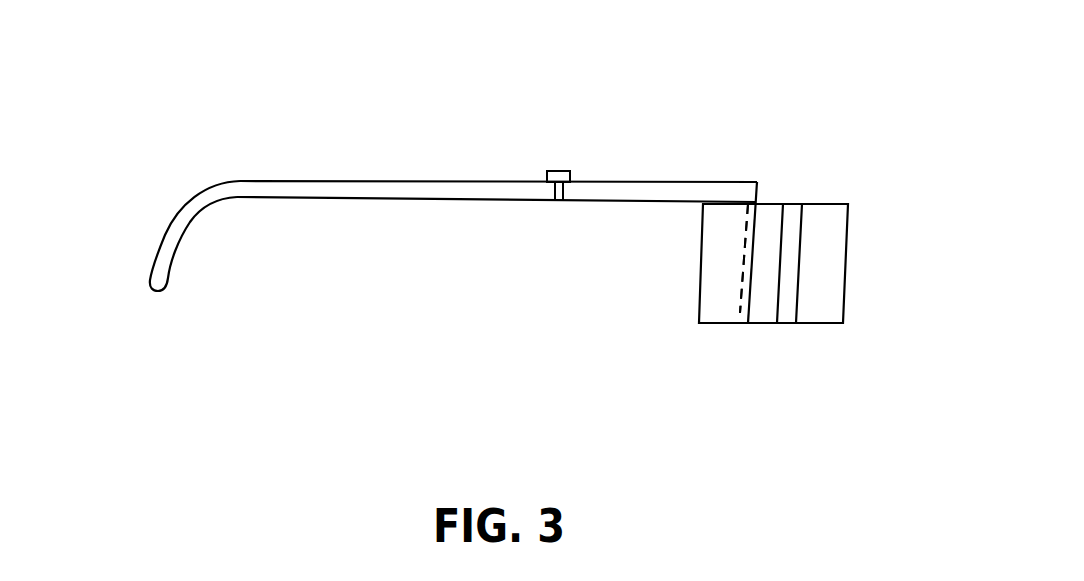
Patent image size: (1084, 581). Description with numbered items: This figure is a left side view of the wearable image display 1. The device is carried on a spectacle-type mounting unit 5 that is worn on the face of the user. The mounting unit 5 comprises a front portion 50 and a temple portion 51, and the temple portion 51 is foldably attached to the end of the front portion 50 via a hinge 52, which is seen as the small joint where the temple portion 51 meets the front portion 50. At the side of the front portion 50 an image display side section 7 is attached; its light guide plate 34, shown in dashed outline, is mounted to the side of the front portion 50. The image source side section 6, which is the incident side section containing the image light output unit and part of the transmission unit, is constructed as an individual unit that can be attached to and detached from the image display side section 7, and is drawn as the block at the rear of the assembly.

The wearable image display 1 is at (445, 135).
The mounting unit 5 is at (628, 182).
The temple portion 51 is at (330, 180).
The hinge 52 is at (552, 171).
The front portion 50 is at (742, 181).
The image source side section 6 is at (811, 323).
The image display side section 7 is at (741, 315).
The light guide plate 34 is at (742, 270).